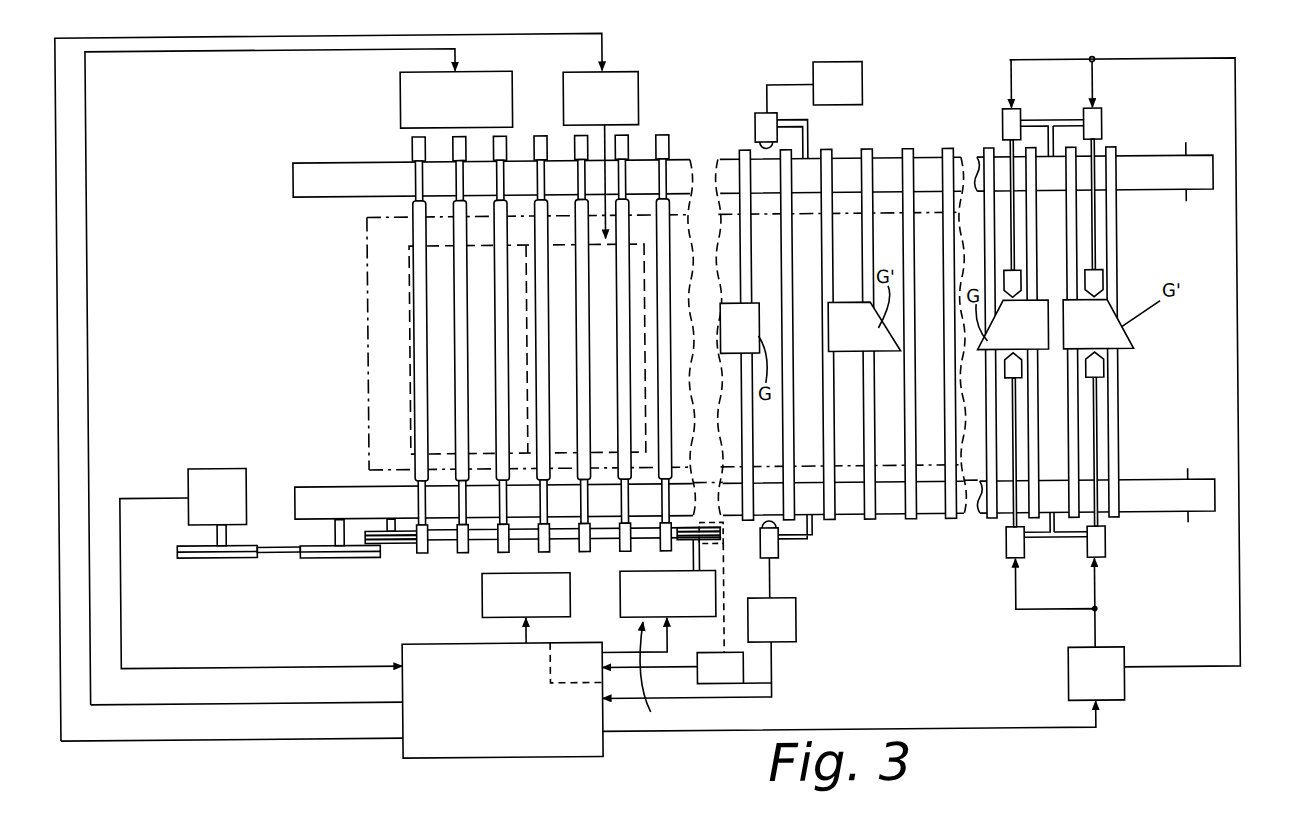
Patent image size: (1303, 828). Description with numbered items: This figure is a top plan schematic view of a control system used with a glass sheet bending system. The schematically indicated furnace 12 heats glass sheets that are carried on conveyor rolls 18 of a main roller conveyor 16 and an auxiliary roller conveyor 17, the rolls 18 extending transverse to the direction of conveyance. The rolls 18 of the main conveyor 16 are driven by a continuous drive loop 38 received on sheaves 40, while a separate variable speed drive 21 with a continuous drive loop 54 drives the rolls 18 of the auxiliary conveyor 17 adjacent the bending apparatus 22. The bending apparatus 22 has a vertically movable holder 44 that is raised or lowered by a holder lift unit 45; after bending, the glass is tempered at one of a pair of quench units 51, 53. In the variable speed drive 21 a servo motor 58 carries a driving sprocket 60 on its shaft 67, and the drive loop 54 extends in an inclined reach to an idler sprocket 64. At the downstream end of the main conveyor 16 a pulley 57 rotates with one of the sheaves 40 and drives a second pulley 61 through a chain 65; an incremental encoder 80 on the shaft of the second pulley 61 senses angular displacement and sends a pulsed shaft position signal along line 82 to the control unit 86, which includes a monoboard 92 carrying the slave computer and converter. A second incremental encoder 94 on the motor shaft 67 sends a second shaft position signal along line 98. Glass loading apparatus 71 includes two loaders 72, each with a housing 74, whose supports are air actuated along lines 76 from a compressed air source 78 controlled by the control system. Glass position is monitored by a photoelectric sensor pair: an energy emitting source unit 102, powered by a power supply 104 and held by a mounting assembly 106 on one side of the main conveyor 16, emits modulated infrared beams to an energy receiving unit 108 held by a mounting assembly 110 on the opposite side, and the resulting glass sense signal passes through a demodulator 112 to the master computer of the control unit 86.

The furnace 12 is at (690, 212).
The main roller conveyor 16 is at (1123, 415).
The auxiliary roller conveyor 17 is at (413, 226).
The conveyor rolls 18 is at (802, 316).
The variable speed drive 21 is at (659, 678).
The bending apparatus 22 is at (621, 63).
The continuous drive loops 38 is at (1122, 168).
The sheaves 40 is at (752, 339).
The holder 44 is at (410, 268).
The holder lift unit 45 is at (629, 100).
The quench unit 51 is at (406, 93).
The quench unit 53 is at (502, 590).
The continuous drive loops 54 is at (482, 538).
The pulley 57 is at (342, 556).
The servo motor 58 is at (640, 589).
The driving sprocket 60 is at (716, 543).
The second pulley 61 is at (178, 542).
The idler sprocket 64 is at (404, 541).
The chain 65 is at (278, 550).
The shaft 67 is at (692, 555).
The glass loading apparatus 71 is at (1048, 59).
The loaders 72 is at (1000, 137).
The housing 74 is at (1084, 280).
The air lines 76 is at (1133, 620).
The compressed air source 78 is at (1082, 686).
The incremental encoder 80 is at (208, 465).
The line 82 is at (239, 664).
The control unit 86 is at (400, 758).
The monoboard 92 is at (565, 683).
The second incremental encoder 94 is at (744, 682).
The line 98 is at (682, 669).
The energy emitting source unit 102 is at (761, 114).
The power supply 104 is at (850, 75).
The mounting assembly 106 is at (810, 141).
The energy receiving unit 108 is at (778, 551).
The mounting assembly 110 is at (812, 537).
The demodulator 112 is at (784, 619).